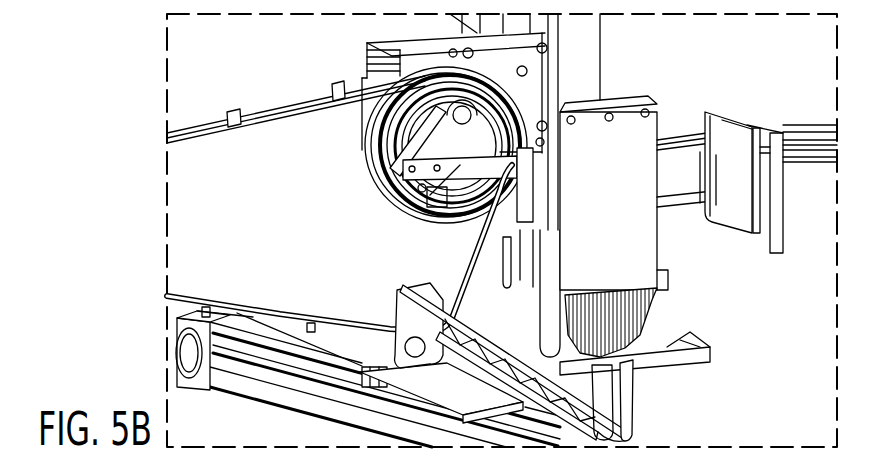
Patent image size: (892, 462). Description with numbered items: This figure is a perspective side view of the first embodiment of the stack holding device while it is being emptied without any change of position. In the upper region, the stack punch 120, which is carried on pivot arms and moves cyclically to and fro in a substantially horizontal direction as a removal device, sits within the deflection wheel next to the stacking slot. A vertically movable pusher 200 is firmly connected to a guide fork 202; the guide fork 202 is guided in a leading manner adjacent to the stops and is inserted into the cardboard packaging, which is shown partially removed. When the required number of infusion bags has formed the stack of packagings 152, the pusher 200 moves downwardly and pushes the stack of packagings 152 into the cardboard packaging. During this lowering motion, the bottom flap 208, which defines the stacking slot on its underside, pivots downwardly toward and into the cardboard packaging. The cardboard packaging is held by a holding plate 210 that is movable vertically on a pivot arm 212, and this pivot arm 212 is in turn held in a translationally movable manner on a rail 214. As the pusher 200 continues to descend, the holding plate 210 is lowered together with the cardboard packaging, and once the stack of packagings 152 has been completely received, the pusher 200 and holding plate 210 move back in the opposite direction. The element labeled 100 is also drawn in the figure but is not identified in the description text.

The linear guide rail 100 is at (268, 120).
The stack punch 120 is at (440, 224).
The stack of packagings 152 is at (627, 318).
The pusher 200 is at (633, 206).
The guide fork 202 is at (558, 80).
The bottom flap 208 is at (657, 256).
The holding plate 210 is at (713, 353).
The pivot arm 212 is at (633, 410).
The rail 214 is at (335, 352).